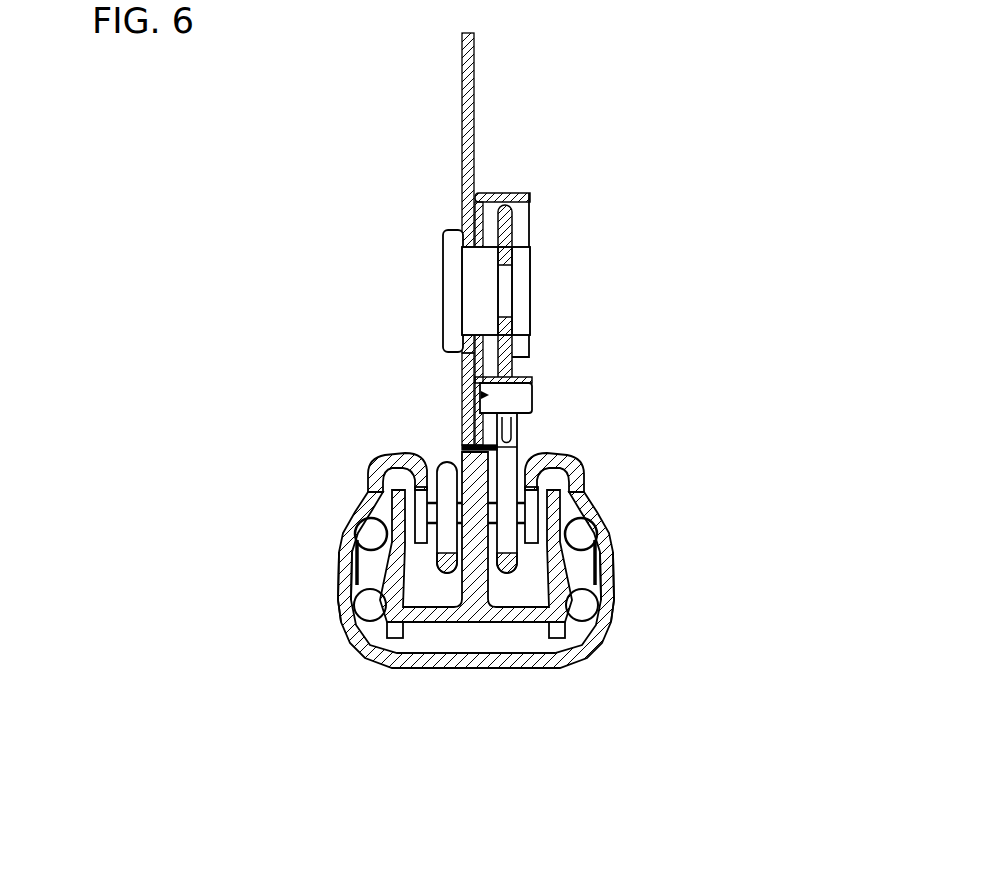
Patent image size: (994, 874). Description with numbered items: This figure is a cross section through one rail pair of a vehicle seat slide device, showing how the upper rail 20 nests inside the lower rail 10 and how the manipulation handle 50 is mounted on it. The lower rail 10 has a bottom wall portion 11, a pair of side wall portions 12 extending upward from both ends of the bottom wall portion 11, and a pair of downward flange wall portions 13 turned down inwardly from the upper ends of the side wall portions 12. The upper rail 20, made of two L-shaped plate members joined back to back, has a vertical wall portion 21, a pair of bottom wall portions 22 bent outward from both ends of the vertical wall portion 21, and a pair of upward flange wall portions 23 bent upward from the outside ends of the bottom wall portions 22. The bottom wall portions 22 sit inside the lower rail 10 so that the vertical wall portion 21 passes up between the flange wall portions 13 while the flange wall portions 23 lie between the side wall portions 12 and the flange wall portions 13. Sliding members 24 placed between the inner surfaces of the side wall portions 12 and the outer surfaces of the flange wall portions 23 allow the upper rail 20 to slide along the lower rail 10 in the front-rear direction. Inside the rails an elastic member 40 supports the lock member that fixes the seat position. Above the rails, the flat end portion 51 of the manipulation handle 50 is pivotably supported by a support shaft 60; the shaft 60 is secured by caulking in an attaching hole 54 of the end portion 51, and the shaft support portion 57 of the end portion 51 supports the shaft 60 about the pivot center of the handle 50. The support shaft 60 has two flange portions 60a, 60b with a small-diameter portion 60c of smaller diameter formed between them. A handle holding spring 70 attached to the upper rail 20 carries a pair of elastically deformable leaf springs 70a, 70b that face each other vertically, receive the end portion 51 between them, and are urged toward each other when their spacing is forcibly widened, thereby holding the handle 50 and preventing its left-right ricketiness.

The lower rail 10 is at (598, 644).
The bottom wall portion 11 is at (486, 668).
The side wall portion 12 is at (338, 603).
The downward flange wall portion 13 is at (375, 483).
The upper rail 20 is at (463, 367).
The vertical wall portion 21 is at (462, 397).
The bottom wall portion 22 is at (438, 620).
The upward flange wall portion 23 is at (355, 540).
The sliding member 24 is at (343, 576).
The elastic member 40 is at (515, 465).
The manipulation handle 50 is at (518, 243).
The end portion 51 is at (518, 229).
The attaching hole 54 is at (495, 281).
The shaft support portion 57 is at (505, 215).
The support shaft 60 is at (605, 267).
The flange portion 60a is at (485, 315).
The flange portion 60b is at (525, 268).
The small-diameter portion 60c is at (508, 292).
The handle holding spring 70 is at (530, 194).
The leaf spring 70a is at (510, 192).
The leaf spring 70b is at (520, 398).